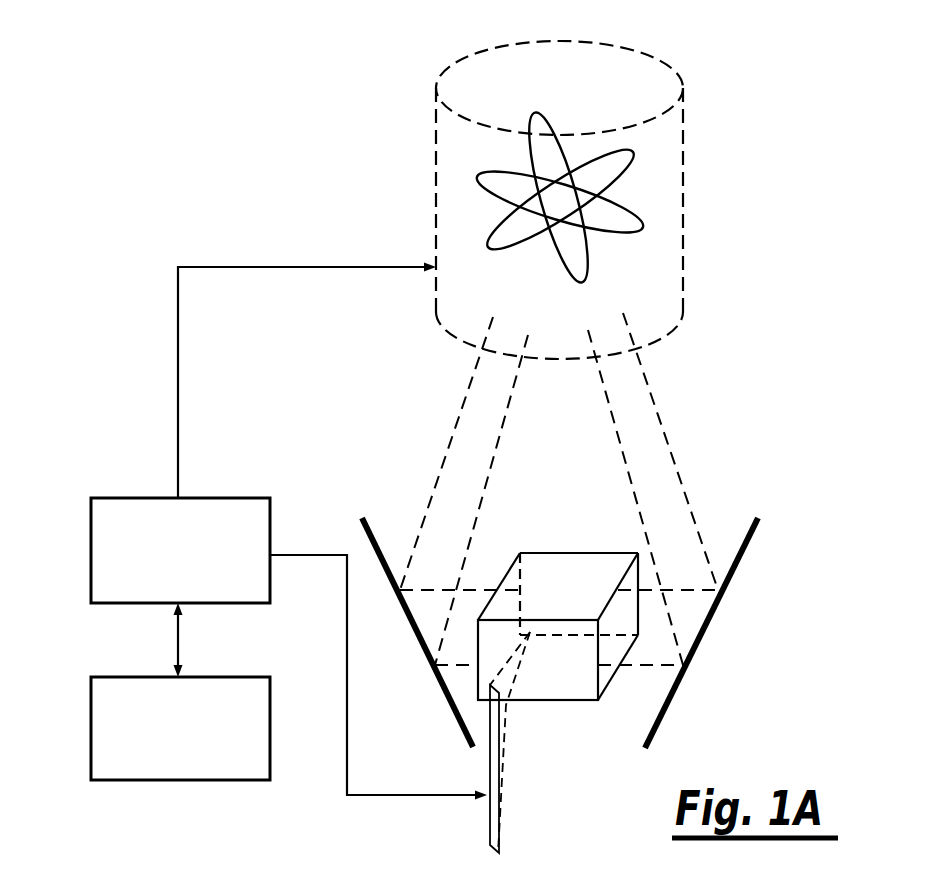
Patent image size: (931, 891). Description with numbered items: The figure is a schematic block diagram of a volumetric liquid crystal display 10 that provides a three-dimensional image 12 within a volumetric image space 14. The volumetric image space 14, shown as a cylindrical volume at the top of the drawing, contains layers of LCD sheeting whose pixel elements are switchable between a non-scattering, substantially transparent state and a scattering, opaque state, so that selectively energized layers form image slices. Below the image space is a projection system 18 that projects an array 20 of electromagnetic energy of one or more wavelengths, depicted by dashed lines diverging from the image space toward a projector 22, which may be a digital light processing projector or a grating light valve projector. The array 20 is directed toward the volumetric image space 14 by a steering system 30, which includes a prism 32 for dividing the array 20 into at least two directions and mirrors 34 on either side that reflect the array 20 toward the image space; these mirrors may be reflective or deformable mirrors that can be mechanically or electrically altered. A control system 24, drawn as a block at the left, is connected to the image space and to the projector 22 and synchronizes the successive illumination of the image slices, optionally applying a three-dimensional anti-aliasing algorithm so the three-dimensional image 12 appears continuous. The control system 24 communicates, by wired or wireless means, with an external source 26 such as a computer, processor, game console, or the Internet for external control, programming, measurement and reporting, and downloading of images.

The volumetric liquid crystal display 10 is at (610, 187).
The three-dimensional image 12 is at (527, 107).
The volumetric image space 14 is at (660, 165).
The projection system 18 is at (566, 489).
The array of electromagnetic energy 20 is at (443, 448).
The projector 22 is at (487, 822).
The control system 24 is at (90, 537).
The external source 26 is at (90, 718).
The steering system 30 is at (602, 639).
The prism 32 is at (547, 700).
The mirrors 34 is at (443, 695).